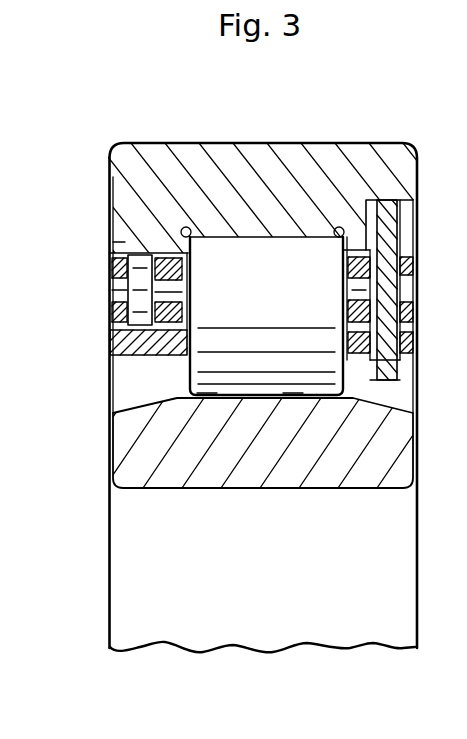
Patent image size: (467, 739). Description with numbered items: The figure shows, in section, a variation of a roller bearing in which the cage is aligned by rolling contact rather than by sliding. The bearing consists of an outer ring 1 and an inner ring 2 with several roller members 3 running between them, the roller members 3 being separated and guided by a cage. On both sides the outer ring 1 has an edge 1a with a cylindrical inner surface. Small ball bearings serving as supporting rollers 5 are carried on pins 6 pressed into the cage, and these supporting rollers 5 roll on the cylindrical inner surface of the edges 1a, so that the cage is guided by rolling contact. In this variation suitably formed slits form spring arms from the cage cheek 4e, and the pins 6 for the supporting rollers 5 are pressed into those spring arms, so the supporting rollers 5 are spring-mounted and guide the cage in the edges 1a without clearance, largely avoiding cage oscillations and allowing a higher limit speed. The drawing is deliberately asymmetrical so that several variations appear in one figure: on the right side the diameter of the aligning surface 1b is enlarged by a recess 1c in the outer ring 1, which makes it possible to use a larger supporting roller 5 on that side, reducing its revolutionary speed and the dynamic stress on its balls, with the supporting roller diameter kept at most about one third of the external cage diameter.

The outer ring 1 is at (231, 193).
The edge 1a is at (168, 247).
The aligning surface 1b is at (369, 205).
The recess 1c is at (409, 212).
The inner ring 2 is at (187, 448).
The roller members 3 is at (313, 267).
The cage cheek 4e is at (108, 347).
The supporting rollers 5 is at (108, 273).
The pins 6 is at (108, 300).